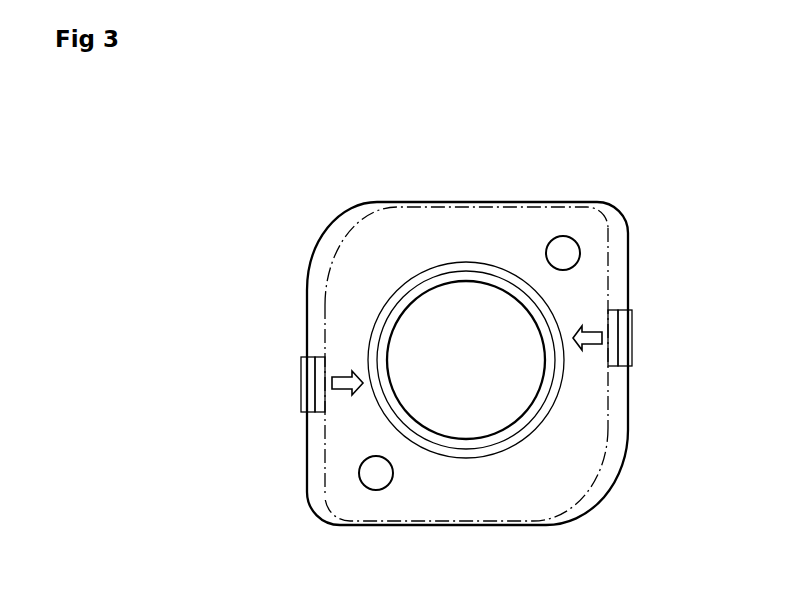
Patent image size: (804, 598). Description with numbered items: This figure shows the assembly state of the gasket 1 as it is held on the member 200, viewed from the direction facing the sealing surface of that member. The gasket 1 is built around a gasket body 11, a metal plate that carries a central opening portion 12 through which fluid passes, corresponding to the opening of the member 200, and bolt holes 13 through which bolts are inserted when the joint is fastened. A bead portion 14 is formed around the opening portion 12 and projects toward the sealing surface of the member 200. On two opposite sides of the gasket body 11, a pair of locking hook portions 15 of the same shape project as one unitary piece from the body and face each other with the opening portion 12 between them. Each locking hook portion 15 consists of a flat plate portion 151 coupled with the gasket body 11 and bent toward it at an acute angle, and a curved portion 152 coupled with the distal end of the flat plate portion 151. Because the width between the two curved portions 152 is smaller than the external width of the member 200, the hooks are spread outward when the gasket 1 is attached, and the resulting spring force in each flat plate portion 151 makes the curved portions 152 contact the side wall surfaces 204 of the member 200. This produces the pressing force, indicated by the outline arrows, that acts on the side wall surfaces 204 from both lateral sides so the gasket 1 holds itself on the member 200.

The gasket 1 is at (530, 149).
The gasket body 11 is at (318, 256).
The opening portion 12 is at (465, 281).
The bolt holes 13 is at (565, 236).
The bead portion 14 is at (417, 280).
The locking hook portions 15 is at (217, 360).
The flat plate portion 151 is at (302, 393).
The curved portion 152 is at (302, 369).
The member 200 is at (475, 510).
The side wall surfaces 204 is at (326, 470).